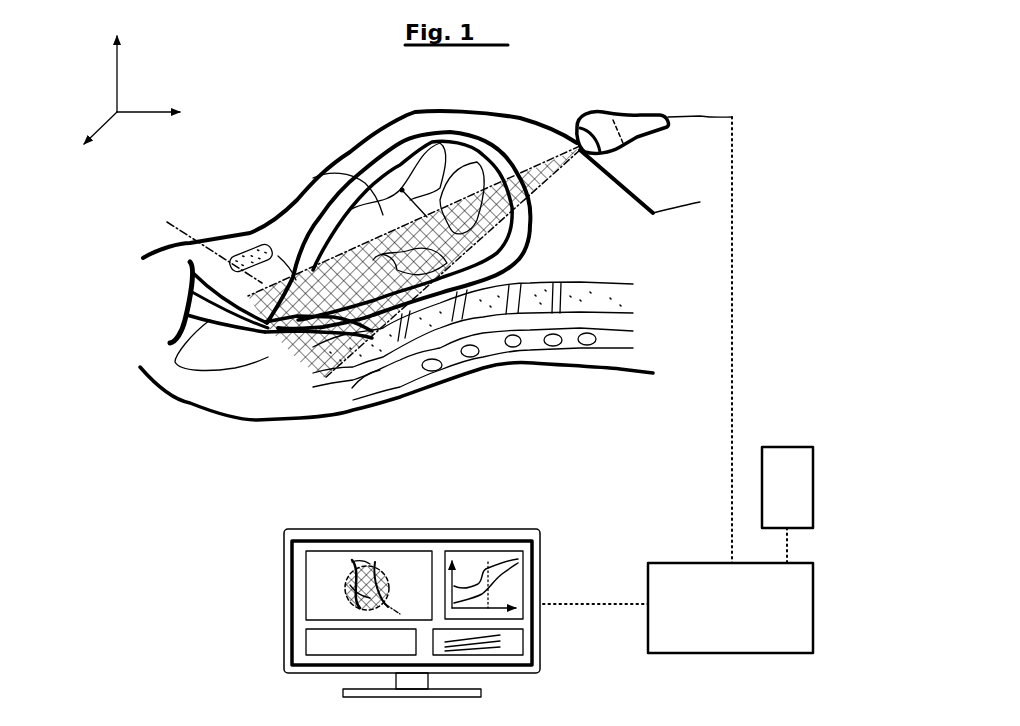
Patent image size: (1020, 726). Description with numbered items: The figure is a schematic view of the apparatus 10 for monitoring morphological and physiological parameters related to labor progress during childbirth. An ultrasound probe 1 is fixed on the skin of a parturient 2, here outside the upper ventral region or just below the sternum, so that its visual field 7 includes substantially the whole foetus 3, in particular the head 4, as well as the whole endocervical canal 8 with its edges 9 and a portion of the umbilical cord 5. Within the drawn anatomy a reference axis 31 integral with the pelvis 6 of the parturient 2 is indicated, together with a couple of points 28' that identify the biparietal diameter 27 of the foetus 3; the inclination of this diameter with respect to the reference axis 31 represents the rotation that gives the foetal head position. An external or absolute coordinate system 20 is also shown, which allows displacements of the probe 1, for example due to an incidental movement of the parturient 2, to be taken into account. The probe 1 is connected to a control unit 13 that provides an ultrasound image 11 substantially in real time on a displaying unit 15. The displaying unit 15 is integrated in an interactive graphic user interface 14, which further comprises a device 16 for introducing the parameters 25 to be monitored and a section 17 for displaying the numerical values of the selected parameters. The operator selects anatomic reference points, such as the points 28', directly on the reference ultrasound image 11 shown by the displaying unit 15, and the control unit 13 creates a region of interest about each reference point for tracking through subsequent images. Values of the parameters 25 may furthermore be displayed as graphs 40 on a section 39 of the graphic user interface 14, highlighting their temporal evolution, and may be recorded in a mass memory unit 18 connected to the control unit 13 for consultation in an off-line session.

The ultrasound probe 1 is at (642, 108).
The parturient 2 is at (338, 112).
The foetus 3 is at (315, 178).
The head 4 is at (393, 357).
The umbilical cord 5 is at (445, 190).
The pelvis 6 is at (281, 262).
The visual field 7 is at (522, 163).
The endocervical canal 8 is at (270, 352).
The edges 9 is at (162, 307).
The apparatus 10 is at (763, 145).
The ultrasound image 11 is at (388, 558).
The control unit 13 is at (716, 624).
The interactive graphic user interface 14 is at (206, 597).
The displaying unit 15 is at (306, 600).
The device for introducing the parameters 16 is at (523, 653).
The section for displaying numerical values 17 is at (306, 643).
The mass memory unit 18 is at (774, 495).
The external coordinate system 20 is at (134, 98).
The parameters 25 is at (500, 647).
The biparietal diameter 27 is at (390, 221).
The anatomic reference points 28' is at (325, 320).
The reference axis 31 is at (177, 220).
The section for graphs 39 is at (512, 598).
The graphs 40 is at (470, 560).